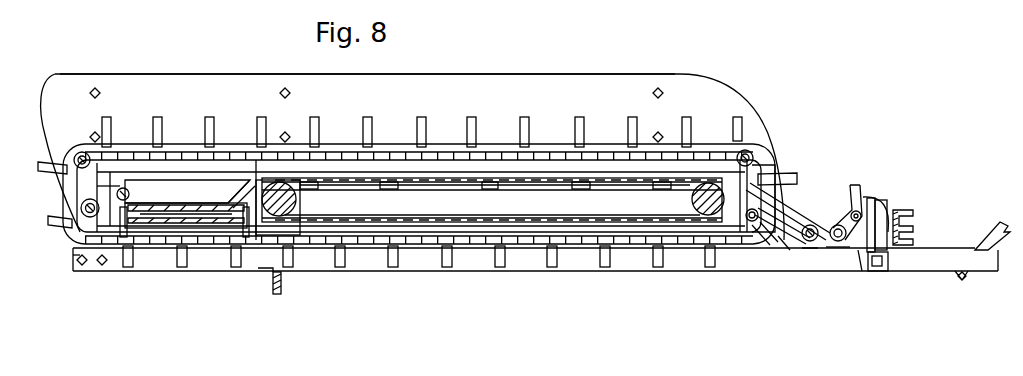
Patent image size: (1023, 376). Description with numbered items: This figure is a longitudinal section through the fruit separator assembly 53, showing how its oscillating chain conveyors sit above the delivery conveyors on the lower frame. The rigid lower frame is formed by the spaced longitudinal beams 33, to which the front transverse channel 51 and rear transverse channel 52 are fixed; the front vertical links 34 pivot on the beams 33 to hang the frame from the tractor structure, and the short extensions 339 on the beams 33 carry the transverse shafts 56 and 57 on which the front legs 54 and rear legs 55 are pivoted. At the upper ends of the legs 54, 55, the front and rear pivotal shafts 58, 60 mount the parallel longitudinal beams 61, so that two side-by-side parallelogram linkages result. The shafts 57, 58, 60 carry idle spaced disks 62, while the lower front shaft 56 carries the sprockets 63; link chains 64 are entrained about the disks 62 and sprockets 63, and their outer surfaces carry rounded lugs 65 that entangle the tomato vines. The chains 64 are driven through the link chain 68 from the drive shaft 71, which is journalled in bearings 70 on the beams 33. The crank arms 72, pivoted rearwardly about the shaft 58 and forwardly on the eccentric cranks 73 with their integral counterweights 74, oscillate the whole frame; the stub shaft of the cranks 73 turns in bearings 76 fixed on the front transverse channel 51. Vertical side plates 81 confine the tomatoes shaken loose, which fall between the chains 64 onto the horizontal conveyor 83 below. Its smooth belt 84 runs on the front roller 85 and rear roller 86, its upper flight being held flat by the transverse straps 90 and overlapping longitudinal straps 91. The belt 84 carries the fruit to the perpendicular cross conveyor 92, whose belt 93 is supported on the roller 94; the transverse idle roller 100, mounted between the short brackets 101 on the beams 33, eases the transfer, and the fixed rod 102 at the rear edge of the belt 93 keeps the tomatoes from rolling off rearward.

The longitudinal beams 33 is at (885, 255).
The base plate flange 339 is at (80, 255).
The front vertical links 34 is at (993, 240).
The front transverse channel 51 is at (912, 227).
The rear transverse channel 52 is at (282, 288).
The fruit separator assembly 53 is at (511, 70).
The front legs 54 is at (790, 178).
The rear legs 55 is at (100, 186).
The transverse shaft 56 is at (798, 192).
The transverse shaft 57 is at (80, 222).
The front pivotal shaft 58 is at (762, 160).
The rear pivotal shaft 60 is at (72, 179).
The longitudinal beams 61 is at (640, 168).
The spaced disks 62 is at (90, 157).
The sprockets 63 is at (755, 240).
The link chains 64 is at (333, 150).
The lugs 65 is at (475, 128).
The link chain 68 is at (805, 208).
The bearings 70 is at (832, 244).
The drive shaft 71 is at (812, 242).
The crank arms 72 is at (856, 198).
The eccentric cranks 73 is at (858, 252).
The counterweights 74 is at (887, 202).
The bearings 76 is at (877, 195).
The vertical side plates 81 is at (588, 75).
The horizontal conveyor 83 is at (438, 190).
The smooth belt 84 is at (492, 200).
The front roller 85 is at (690, 199).
The rear roller 86 is at (298, 202).
The transverse straps 90 is at (383, 190).
The longitudinal straps 91 is at (487, 205).
The cross conveyor 92 is at (202, 201).
The belt 93 is at (229, 203).
The roller 94 is at (175, 222).
The transverse idle roller 100 is at (258, 200).
The brackets 101 is at (278, 207).
The fixed rod 102 is at (130, 193).